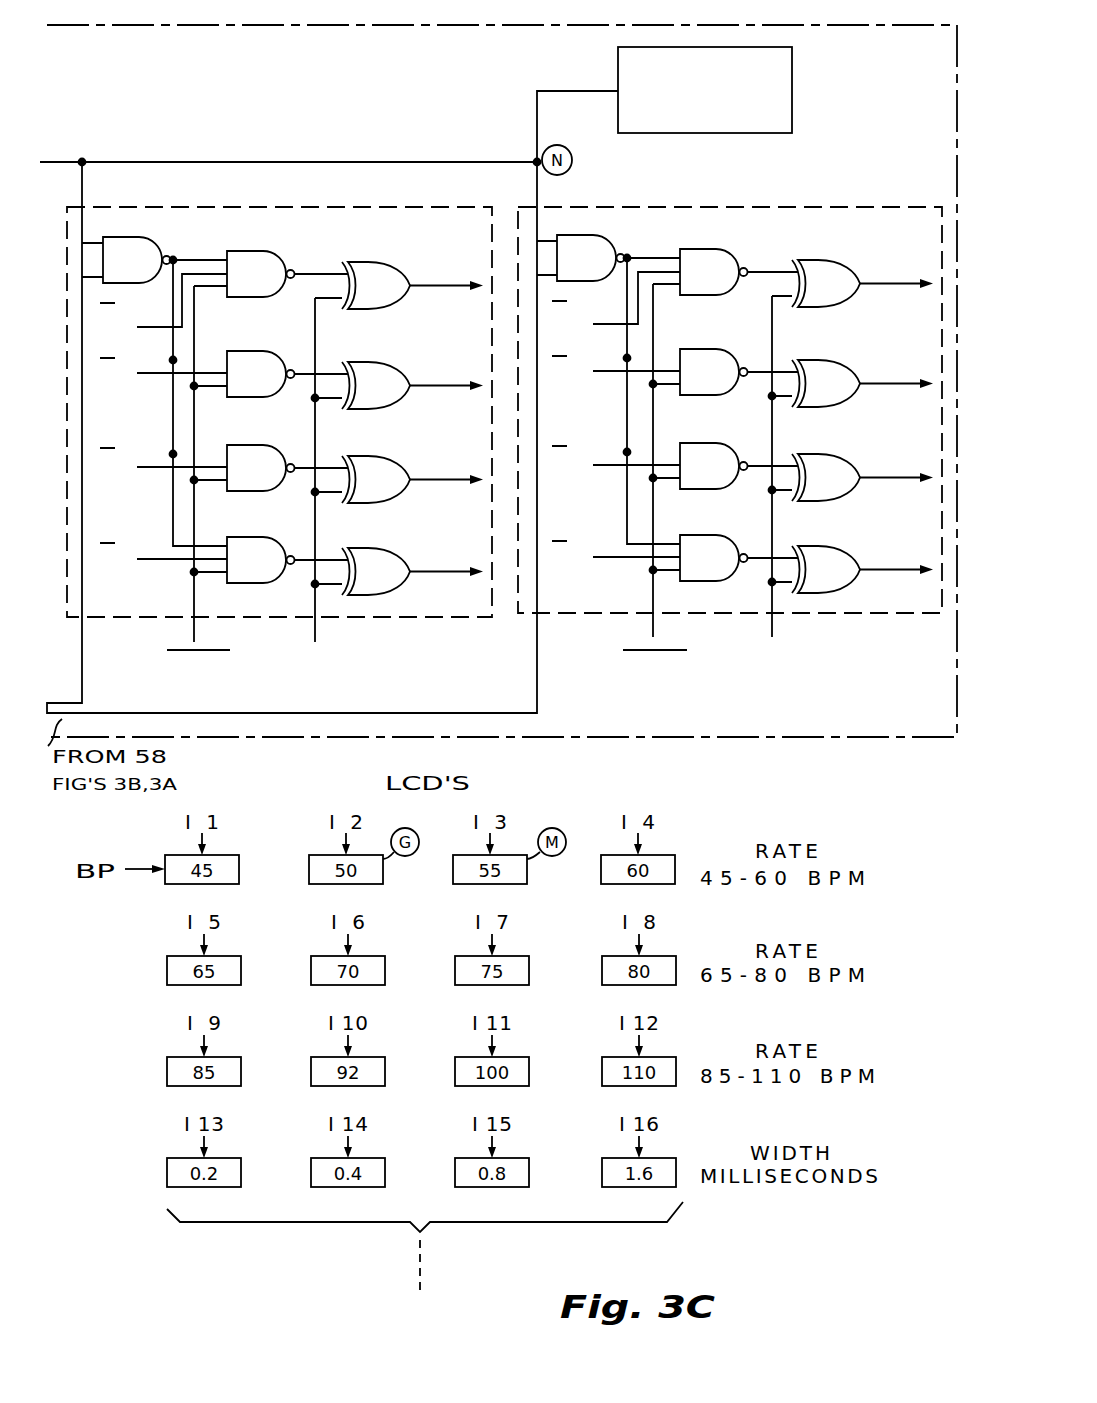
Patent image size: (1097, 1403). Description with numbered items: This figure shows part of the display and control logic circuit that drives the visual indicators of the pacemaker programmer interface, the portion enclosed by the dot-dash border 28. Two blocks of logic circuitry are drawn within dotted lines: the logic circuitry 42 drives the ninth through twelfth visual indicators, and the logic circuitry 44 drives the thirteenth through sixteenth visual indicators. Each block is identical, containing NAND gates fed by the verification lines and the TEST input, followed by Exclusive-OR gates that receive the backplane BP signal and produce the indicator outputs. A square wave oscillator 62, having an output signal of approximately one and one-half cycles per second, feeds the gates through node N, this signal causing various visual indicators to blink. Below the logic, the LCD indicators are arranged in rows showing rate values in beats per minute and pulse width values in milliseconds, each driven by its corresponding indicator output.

The display unit 28 is at (939, 9).
The logic circuitry block 42 is at (440, 208).
The logic circuitry block 44 is at (866, 207).
The square wave oscillator 62 is at (617, 62).